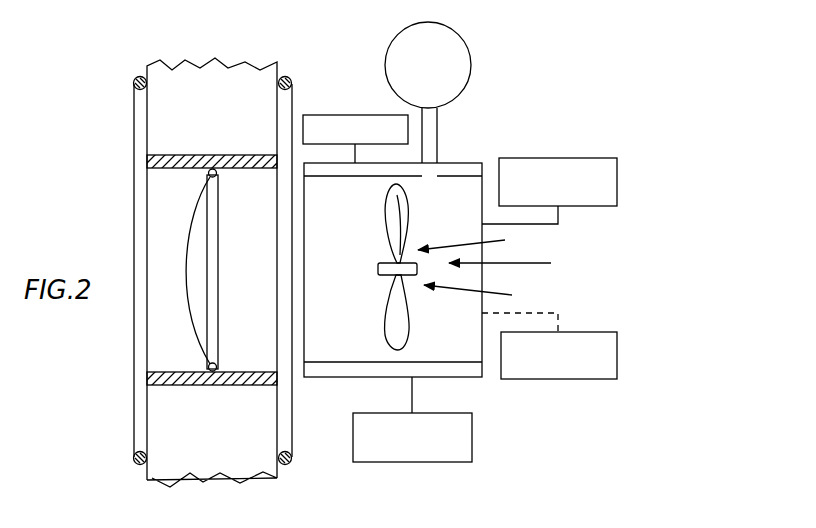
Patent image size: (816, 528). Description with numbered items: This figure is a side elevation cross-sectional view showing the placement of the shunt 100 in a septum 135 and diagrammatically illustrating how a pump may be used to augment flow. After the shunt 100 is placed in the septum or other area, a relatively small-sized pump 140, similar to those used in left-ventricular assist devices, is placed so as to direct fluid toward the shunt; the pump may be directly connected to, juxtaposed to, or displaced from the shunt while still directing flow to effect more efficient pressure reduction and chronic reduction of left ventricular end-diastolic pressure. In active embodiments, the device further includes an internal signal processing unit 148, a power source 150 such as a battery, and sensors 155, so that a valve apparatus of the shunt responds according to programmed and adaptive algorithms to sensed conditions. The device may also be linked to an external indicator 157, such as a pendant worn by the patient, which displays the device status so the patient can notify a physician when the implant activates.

The pipe / conduit 135 is at (205, 62).
The shunt 100 is at (457, 163).
The pump 140 is at (472, 73).
The sensors 155 is at (380, 115).
The power source 150 is at (540, 158).
The external indicator 157 is at (540, 379).
The internal signal processing unit 148 is at (393, 462).